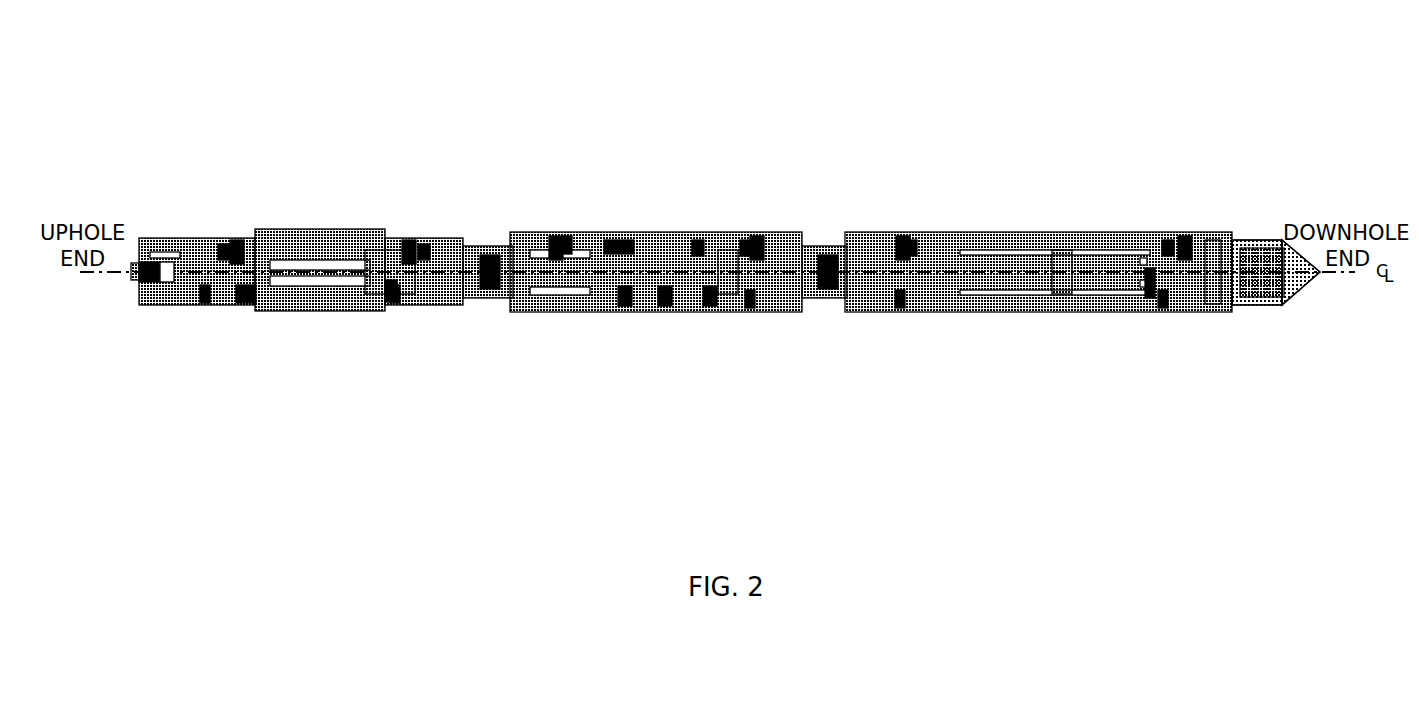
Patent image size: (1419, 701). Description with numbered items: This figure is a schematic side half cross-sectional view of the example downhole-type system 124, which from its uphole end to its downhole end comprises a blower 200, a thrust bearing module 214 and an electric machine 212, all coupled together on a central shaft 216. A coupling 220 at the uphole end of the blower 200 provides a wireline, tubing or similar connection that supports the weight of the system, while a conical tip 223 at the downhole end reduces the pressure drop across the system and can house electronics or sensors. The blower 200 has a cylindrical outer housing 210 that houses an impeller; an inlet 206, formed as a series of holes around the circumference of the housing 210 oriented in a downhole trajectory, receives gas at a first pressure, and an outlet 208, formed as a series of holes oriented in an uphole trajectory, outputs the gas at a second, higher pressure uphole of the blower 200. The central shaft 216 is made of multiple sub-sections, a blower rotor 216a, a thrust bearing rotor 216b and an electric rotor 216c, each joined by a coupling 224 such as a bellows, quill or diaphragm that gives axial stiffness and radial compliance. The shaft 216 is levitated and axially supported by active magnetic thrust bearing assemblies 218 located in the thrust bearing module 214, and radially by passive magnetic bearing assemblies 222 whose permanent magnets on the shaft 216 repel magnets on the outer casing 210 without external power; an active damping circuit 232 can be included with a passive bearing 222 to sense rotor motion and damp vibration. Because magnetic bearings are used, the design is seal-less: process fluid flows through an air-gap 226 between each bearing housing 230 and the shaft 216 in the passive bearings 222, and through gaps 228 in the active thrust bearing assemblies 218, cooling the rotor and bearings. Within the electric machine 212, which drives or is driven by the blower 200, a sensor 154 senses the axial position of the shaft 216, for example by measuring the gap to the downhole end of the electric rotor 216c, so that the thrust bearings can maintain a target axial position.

The blower 200 is at (323, 126).
The thrust bearing module 214 is at (668, 126).
The electric machine 212 is at (1045, 126).
The cylindrical outer housing 210 is at (365, 310).
The passive magnetic bearing assembly 222 is at (238, 238).
The bearing housing 230 is at (225, 246).
The central shaft 216 is at (392, 258).
The air-gap 226 is at (205, 300).
The gap 228 is at (608, 248).
The active damping circuit 232 is at (1213, 248).
The coupling 220 is at (122, 292).
The outlet 208 is at (245, 300).
The blower rotor 216a is at (372, 295).
The inlet 206 is at (390, 305).
The coupling 224 is at (490, 300).
The active magnetic thrust bearing assembly 218 is at (710, 300).
The thrust bearing rotor 216b is at (727, 300).
The electric rotor 216c is at (1062, 300).
The sensor 154 is at (1150, 300).
The conical tip 223 is at (1300, 300).
The downhole-type system 124 is at (1211, 462).